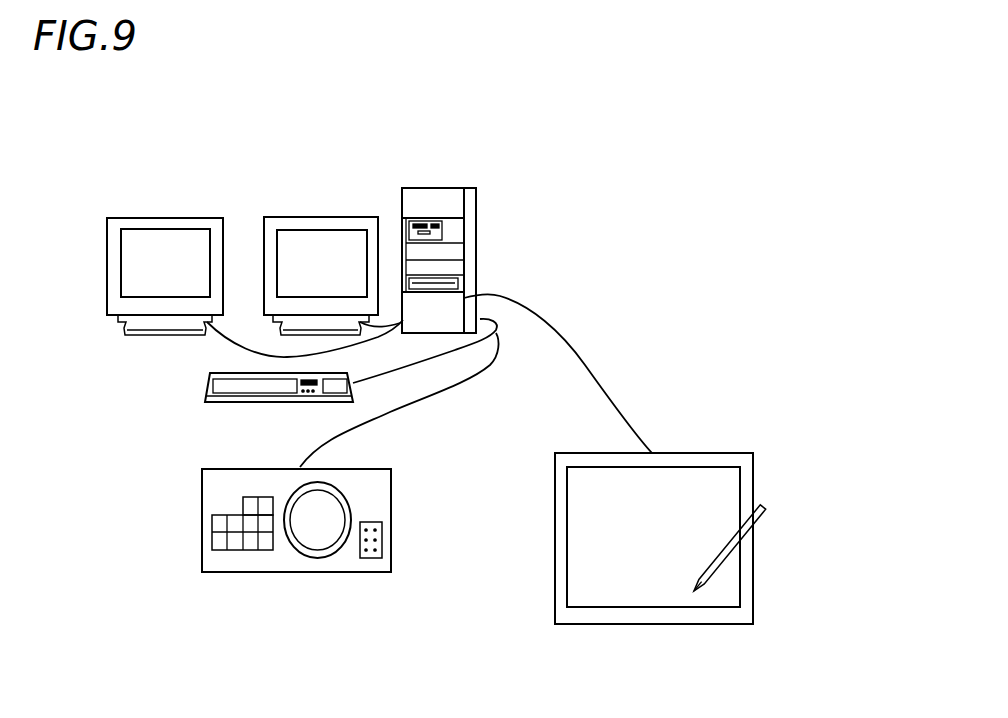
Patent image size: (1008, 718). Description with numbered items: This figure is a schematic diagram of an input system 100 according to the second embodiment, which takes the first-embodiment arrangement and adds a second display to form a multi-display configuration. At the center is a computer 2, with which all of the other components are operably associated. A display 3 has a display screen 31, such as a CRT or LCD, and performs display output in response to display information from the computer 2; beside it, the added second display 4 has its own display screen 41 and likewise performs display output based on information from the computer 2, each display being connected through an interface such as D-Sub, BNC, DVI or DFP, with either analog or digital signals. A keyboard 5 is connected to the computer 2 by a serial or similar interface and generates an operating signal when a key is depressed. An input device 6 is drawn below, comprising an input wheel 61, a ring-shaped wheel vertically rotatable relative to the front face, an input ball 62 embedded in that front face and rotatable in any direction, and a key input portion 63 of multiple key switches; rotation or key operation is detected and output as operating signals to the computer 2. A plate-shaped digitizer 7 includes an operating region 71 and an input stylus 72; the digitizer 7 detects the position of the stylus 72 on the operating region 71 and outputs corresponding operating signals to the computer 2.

The input system 100 is at (672, 211).
The computer 2 is at (477, 212).
The display 3 is at (324, 242).
The display screen 31 is at (322, 230).
The second display 4 is at (132, 240).
The display screen 41 is at (120, 247).
The keyboard 5 is at (205, 392).
The input device 6 is at (295, 559).
The input wheel 61 is at (382, 538).
The input ball 62 is at (317, 538).
The key input portion 63 is at (252, 562).
The digitizer 7 is at (706, 549).
The operating region 71 is at (635, 597).
The input stylus 72 is at (767, 498).